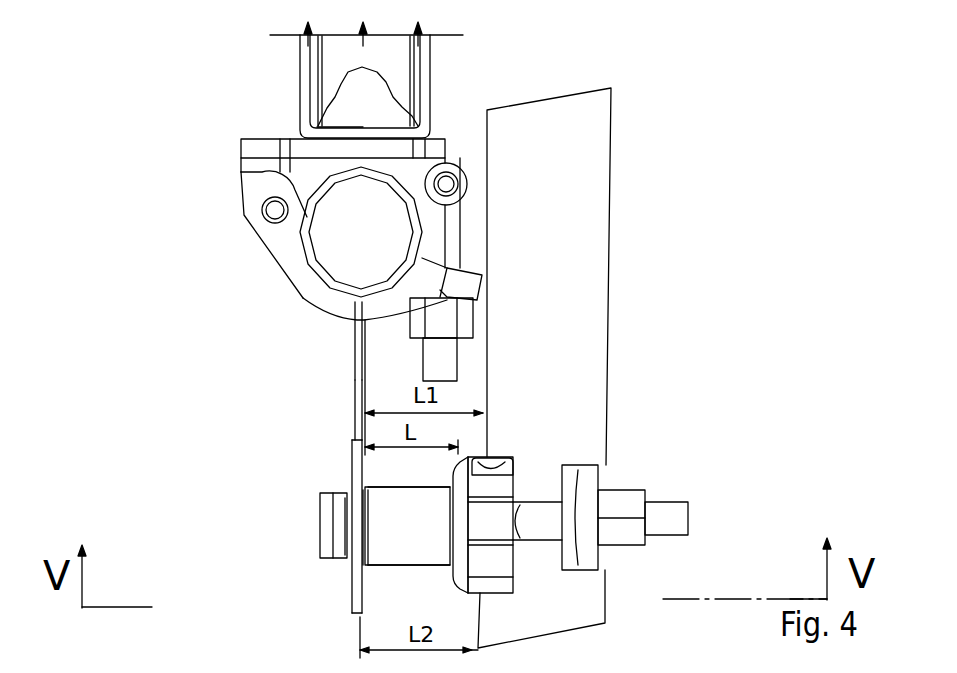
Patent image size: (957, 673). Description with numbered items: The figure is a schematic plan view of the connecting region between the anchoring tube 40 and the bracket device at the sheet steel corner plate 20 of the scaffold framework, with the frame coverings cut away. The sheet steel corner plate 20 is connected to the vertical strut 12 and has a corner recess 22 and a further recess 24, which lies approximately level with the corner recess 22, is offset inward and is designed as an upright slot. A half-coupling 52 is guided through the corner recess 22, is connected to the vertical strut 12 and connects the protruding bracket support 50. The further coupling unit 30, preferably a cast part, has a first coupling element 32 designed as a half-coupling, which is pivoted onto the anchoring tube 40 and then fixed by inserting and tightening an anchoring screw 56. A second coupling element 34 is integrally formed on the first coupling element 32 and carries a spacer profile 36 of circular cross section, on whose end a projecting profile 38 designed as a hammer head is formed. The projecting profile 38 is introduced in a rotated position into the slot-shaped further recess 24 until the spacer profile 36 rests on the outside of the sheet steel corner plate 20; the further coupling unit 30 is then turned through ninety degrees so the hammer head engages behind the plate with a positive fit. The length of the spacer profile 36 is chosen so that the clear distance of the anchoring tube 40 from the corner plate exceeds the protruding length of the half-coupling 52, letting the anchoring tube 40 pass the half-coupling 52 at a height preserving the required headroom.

The vertical strut 12 is at (334, 260).
The sheet steel corner plate 20 is at (272, 434).
The corner recess 22 is at (272, 362).
The further recess 24 is at (271, 526).
The further coupling unit 30 is at (430, 538).
The first coupling element 32 is at (631, 531).
The second coupling element 34 is at (383, 566).
The spacer profile 36 is at (338, 558).
The projecting profile 38 is at (264, 526).
The anchoring tube 40 is at (613, 354).
The bracket support 50 is at (336, 75).
The half-coupling 52 is at (203, 258).
The anchoring screw 56 is at (606, 480).